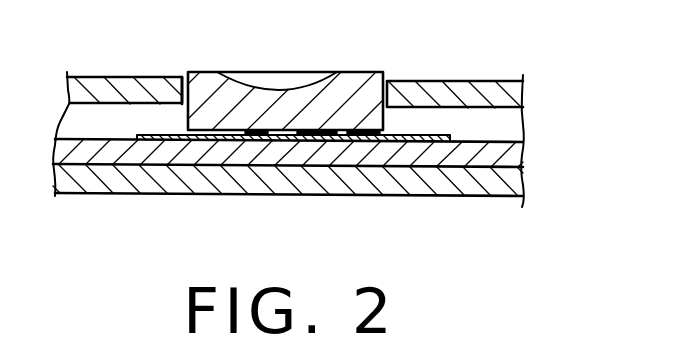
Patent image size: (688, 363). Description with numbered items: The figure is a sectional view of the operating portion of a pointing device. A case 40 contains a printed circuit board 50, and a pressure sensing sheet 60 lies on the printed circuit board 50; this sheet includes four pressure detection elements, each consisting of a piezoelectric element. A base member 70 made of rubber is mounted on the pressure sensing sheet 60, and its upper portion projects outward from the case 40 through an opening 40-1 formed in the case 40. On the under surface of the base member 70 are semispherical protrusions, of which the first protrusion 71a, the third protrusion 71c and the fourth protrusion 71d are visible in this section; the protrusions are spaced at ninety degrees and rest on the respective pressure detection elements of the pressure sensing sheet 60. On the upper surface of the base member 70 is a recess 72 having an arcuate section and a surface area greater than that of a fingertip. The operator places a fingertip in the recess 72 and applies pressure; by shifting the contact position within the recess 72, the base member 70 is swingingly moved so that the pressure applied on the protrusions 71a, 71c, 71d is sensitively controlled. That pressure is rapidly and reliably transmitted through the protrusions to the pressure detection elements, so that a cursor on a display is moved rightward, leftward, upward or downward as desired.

The case 40 is at (500, 90).
The opening 40-1 is at (185, 77).
The printed circuit board 50 is at (513, 154).
The pressure sensing sheet 60 is at (430, 136).
The base member 70 is at (370, 72).
The recess 72 is at (317, 83).
The first protrusion 71a is at (290, 137).
The third protrusion 71c is at (337, 135).
The fourth protrusion 71d is at (250, 134).